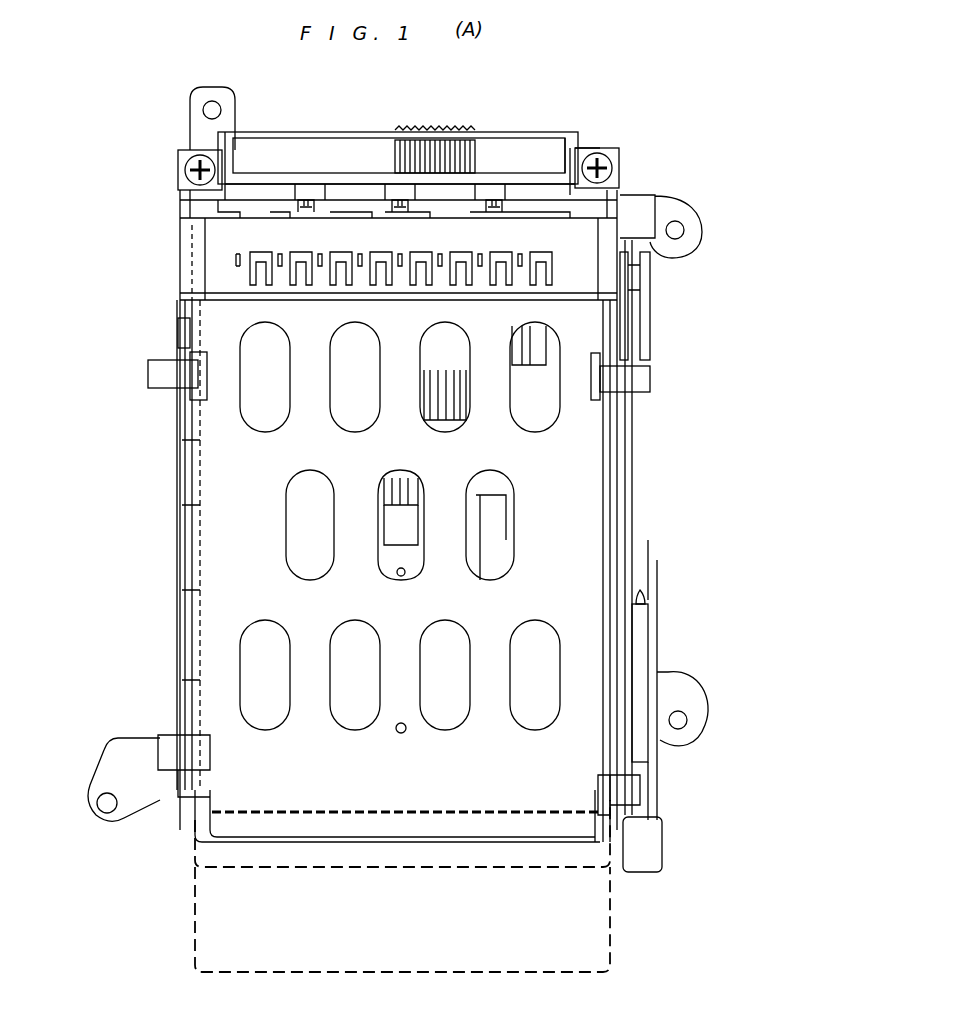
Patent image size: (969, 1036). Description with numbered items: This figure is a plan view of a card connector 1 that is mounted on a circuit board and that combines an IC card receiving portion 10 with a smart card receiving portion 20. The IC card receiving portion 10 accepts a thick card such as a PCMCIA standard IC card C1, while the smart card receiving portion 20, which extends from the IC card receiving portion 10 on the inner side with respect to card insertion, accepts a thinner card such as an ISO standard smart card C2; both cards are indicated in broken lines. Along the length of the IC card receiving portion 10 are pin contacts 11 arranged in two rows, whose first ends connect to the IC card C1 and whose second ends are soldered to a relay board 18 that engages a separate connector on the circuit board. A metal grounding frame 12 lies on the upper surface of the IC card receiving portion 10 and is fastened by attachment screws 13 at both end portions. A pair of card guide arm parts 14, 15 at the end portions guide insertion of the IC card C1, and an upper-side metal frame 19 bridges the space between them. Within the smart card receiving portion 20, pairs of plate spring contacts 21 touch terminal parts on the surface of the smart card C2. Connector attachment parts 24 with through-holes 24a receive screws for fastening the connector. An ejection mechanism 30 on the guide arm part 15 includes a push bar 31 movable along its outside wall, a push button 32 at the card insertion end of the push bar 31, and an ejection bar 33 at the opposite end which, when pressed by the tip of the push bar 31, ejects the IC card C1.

The card connector 1 is at (688, 148).
The IC card receiving portion 10 is at (533, 188).
The pin contacts 11 is at (480, 156).
The grounding frame 12 is at (586, 248).
The attachment screws 13 is at (182, 158).
The card guide arm part 14 is at (178, 393).
The card guide arm part 15 is at (622, 393).
The relay board 18 is at (337, 133).
The upper-side metal frame 19 is at (272, 770).
The smart card receiving portion 20 is at (410, 522).
The plate spring contacts 21 is at (458, 414).
The connector attachment parts 24 is at (198, 98).
The through-holes 24a is at (218, 104).
The ejection mechanism 30 is at (668, 562).
The push bar 31 is at (645, 484).
The push button 32 is at (650, 846).
The ejection bar 33 is at (625, 292).
The IC card C1 is at (545, 865).
The smart card C2 is at (545, 970).